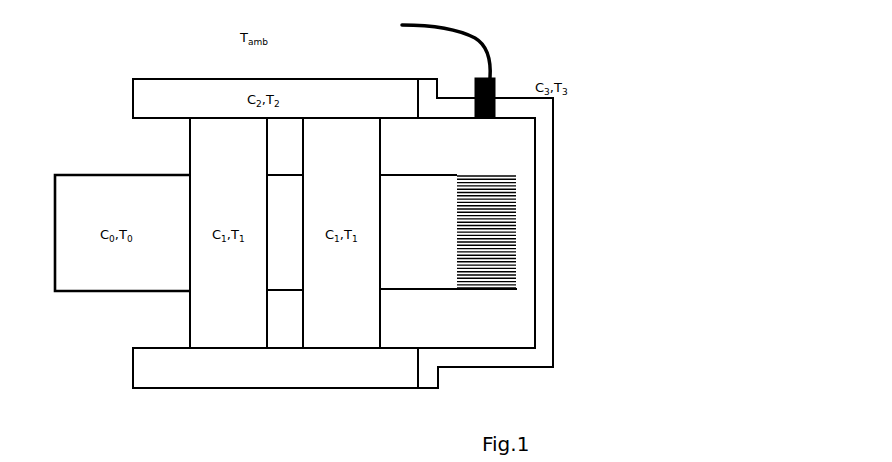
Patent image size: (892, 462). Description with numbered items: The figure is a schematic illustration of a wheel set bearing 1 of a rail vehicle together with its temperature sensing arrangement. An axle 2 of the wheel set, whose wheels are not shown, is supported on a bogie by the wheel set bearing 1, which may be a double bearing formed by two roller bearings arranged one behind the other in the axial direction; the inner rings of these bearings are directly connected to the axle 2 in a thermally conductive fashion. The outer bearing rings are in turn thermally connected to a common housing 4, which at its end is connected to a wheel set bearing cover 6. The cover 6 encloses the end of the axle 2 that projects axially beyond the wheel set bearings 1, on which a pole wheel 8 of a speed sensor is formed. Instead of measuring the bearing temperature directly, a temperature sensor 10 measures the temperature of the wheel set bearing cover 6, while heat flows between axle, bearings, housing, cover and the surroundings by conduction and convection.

The wheel set bearing 1 is at (233, 325).
The axle 2 is at (63, 258).
The housing 4 is at (150, 83).
The wheel set bearing cover 6 is at (547, 162).
The pole wheel 8 is at (485, 280).
The temperature sensor 10 is at (475, 78).